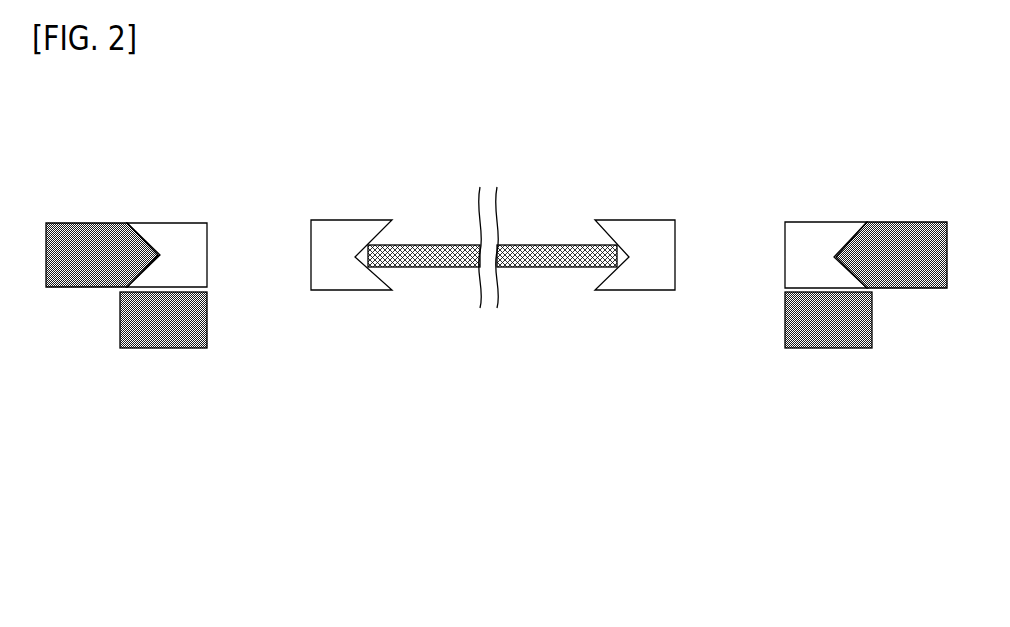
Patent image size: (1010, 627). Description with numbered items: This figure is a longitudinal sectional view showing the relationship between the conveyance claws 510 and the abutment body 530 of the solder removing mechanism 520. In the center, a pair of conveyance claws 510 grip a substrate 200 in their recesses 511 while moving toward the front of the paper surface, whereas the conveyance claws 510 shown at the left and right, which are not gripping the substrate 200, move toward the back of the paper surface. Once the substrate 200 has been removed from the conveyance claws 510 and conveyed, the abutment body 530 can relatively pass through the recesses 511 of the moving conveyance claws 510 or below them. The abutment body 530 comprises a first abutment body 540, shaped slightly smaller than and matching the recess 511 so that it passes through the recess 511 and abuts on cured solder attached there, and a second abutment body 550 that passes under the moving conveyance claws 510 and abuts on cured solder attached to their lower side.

The substrate 200 is at (533, 243).
The conveyance claw 510 is at (172, 220).
The recess 511 is at (155, 247).
The solder removing mechanism 520 is at (147, 483).
The abutment body 530 is at (163, 385).
The first abutment body 540 is at (82, 222).
The second abutment body 550 is at (133, 347).